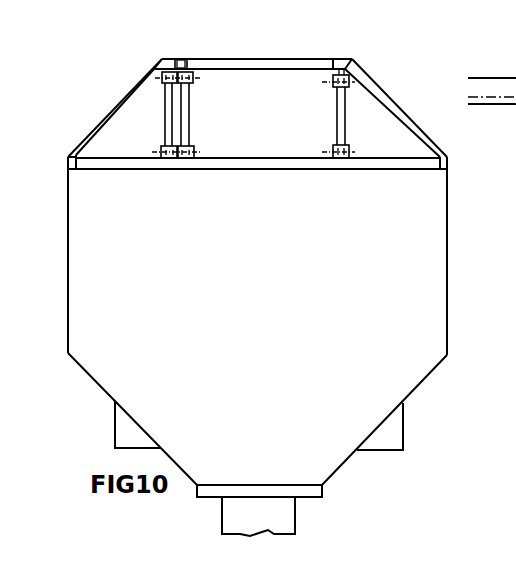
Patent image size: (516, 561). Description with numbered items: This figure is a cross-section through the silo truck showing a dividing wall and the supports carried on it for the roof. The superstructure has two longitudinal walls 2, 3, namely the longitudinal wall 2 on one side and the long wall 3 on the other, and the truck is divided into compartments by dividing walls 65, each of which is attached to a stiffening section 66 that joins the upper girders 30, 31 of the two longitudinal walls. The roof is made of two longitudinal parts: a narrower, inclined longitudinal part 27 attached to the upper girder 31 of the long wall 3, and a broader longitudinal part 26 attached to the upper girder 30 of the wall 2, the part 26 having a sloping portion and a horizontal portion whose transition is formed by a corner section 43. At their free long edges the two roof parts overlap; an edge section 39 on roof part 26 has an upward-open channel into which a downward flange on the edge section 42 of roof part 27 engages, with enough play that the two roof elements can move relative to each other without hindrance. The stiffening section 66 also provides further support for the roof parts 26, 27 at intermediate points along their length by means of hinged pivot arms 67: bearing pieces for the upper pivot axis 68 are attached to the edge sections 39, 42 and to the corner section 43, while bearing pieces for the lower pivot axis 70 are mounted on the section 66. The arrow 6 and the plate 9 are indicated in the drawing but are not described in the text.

The longitudinal wall 2 is at (447, 320).
The long wall 3 is at (69, 247).
The frame assembly 6 is at (84, 101).
The top plate 9 is at (217, 62).
The longitudinal part of the roof 26 is at (362, 63).
The inclined longitudinal part of the roof 27 is at (120, 100).
The upper girder 30 is at (446, 158).
The upper girder 31 is at (68, 156).
The edge section 39 is at (192, 62).
The edge section 42 is at (157, 62).
The corner section 43 is at (341, 63).
The dividing wall 65 is at (420, 246).
The stiffening section 66 is at (247, 158).
The hinged pivot arm 67 is at (337, 118).
The pivot axis 68 is at (333, 82).
The lower pivot axis 70 is at (333, 152).